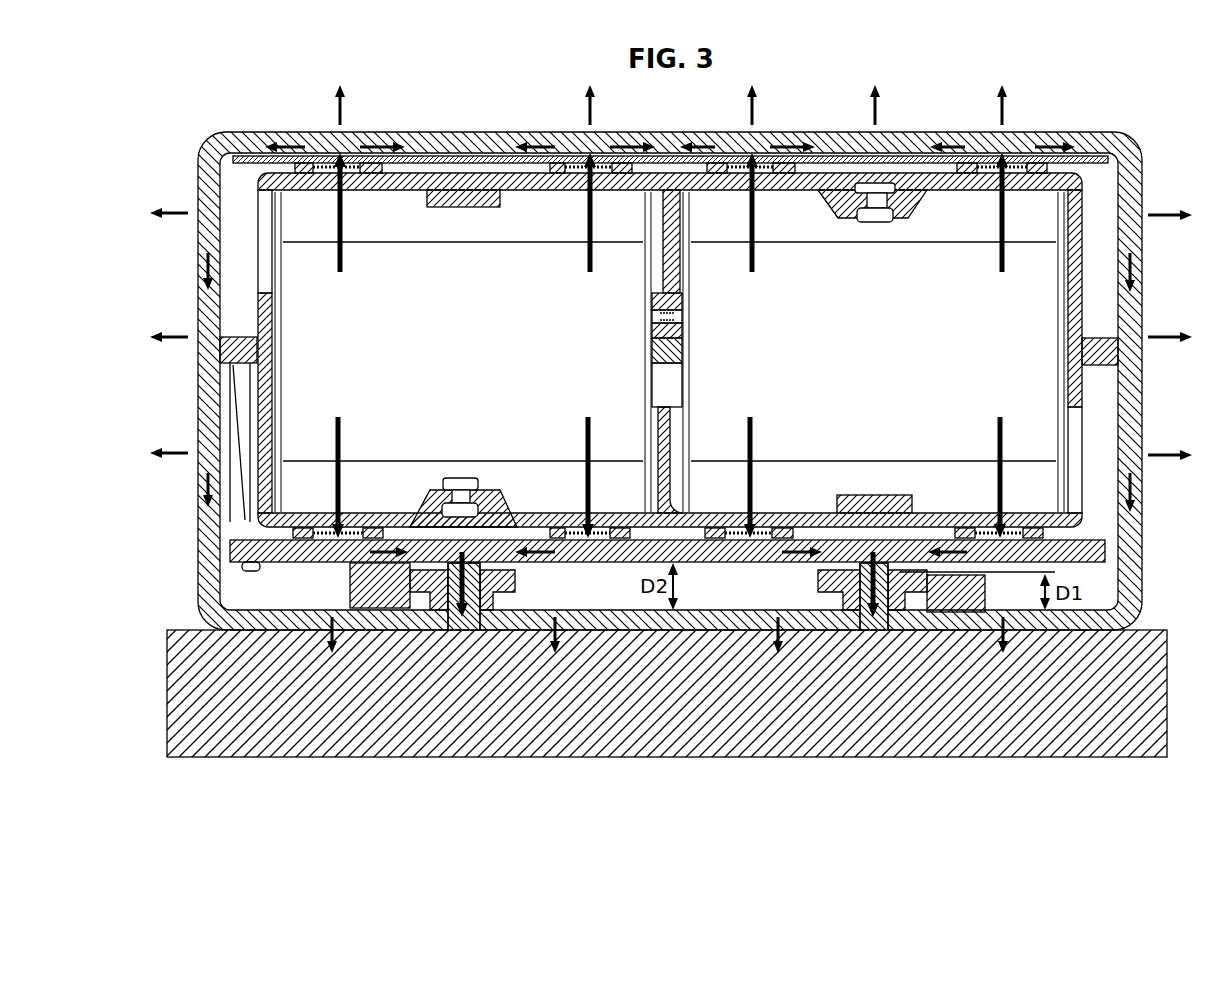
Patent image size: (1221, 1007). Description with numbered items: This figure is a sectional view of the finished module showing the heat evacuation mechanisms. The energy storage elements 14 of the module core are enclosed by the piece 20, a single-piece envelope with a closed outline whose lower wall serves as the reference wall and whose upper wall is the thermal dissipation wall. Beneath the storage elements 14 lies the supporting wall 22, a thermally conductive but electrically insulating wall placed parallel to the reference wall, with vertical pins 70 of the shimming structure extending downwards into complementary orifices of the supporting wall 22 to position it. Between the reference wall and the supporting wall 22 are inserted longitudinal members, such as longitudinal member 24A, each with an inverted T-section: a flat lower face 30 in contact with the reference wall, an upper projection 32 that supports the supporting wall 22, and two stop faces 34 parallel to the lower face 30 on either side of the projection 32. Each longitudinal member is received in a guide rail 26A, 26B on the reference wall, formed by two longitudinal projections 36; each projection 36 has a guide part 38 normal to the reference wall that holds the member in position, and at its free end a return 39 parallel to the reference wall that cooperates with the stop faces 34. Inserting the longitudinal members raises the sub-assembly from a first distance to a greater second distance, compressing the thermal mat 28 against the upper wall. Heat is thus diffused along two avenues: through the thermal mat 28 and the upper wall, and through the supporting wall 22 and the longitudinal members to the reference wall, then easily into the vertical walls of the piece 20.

The energy storage element 14 is at (305, 290).
The piece 20 is at (1150, 396).
The supporting wall 22 is at (1105, 552).
The longitudinal member 24A is at (430, 595).
The guide rail 26A is at (917, 613).
The guide rail 26B is at (515, 600).
The thermal mat 28 is at (1102, 158).
The flat lower face 30 is at (481, 613).
The projection 32 is at (432, 578).
The stop face 34 is at (492, 580).
The longitudinal projection 36 is at (937, 598).
The guide part 38 is at (830, 613).
The return 39 is at (827, 574).
The vertical pin 70 is at (247, 526).